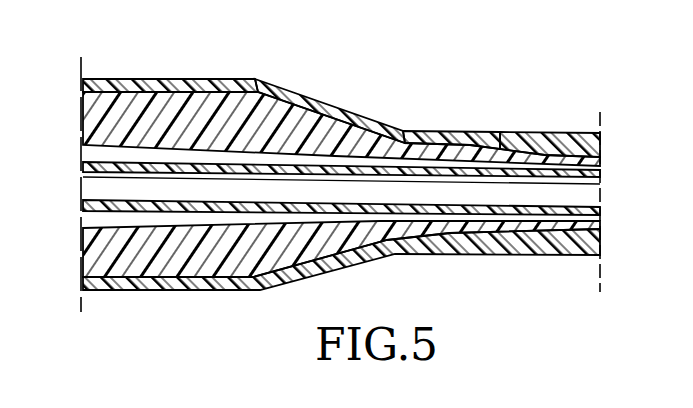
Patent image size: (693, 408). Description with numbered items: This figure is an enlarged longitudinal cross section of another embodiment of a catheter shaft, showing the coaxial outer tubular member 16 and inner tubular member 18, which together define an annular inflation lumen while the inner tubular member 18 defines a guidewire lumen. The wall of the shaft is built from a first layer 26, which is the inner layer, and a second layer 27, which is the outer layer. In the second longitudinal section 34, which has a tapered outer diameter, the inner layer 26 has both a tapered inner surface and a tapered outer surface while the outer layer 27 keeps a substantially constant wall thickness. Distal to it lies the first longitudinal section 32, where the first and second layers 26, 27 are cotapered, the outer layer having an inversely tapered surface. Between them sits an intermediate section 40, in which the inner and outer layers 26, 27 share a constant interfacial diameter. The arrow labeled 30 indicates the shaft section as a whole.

The outer tubular member 16 is at (95, 284).
The inner tubular member 18 is at (93, 211).
The first layer 26 is at (603, 172).
The second layer 27 is at (600, 139).
The transition section 30 is at (317, 73).
The first longitudinal section 32 is at (531, 132).
The second longitudinal section 34 is at (350, 113).
The intermediate section 40 is at (438, 131).